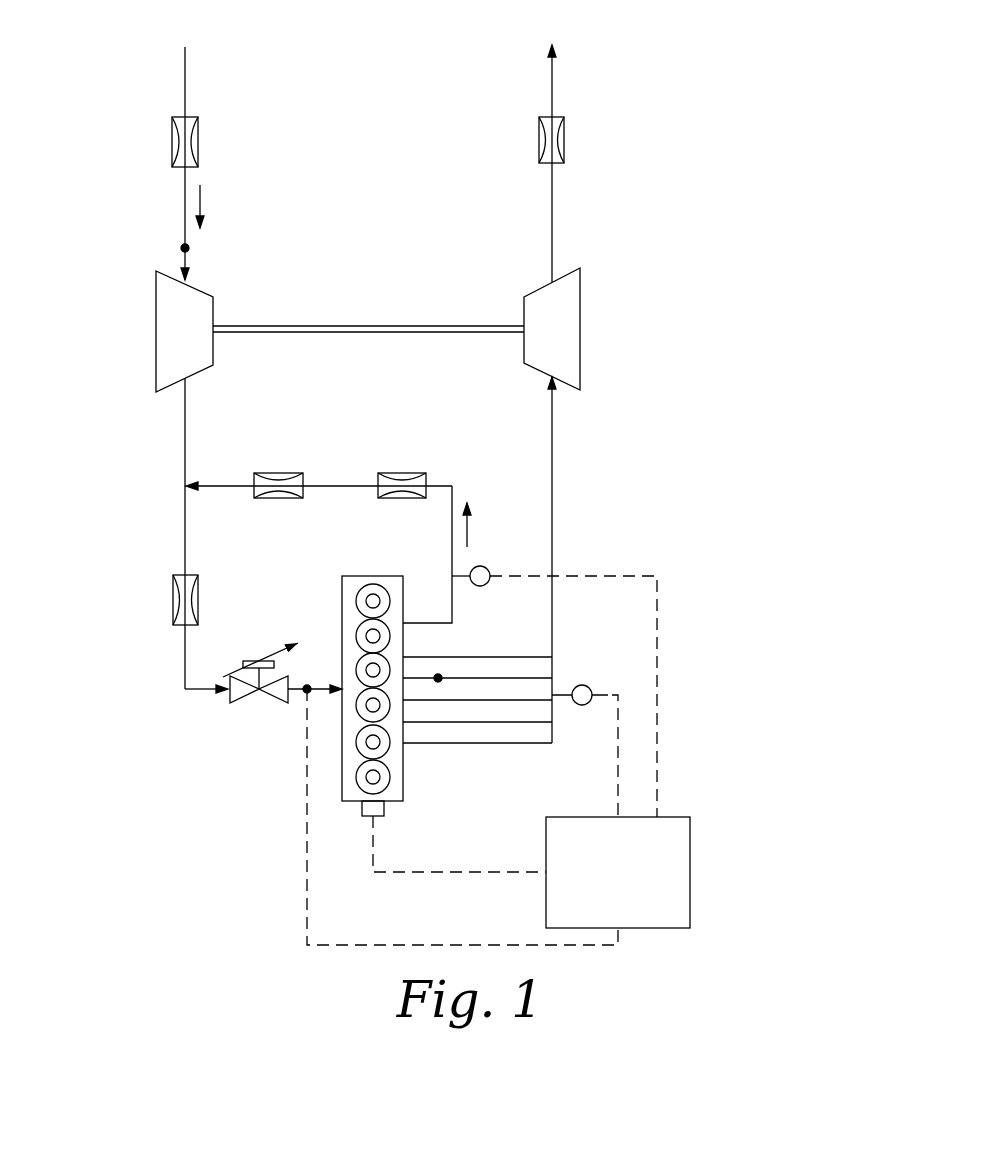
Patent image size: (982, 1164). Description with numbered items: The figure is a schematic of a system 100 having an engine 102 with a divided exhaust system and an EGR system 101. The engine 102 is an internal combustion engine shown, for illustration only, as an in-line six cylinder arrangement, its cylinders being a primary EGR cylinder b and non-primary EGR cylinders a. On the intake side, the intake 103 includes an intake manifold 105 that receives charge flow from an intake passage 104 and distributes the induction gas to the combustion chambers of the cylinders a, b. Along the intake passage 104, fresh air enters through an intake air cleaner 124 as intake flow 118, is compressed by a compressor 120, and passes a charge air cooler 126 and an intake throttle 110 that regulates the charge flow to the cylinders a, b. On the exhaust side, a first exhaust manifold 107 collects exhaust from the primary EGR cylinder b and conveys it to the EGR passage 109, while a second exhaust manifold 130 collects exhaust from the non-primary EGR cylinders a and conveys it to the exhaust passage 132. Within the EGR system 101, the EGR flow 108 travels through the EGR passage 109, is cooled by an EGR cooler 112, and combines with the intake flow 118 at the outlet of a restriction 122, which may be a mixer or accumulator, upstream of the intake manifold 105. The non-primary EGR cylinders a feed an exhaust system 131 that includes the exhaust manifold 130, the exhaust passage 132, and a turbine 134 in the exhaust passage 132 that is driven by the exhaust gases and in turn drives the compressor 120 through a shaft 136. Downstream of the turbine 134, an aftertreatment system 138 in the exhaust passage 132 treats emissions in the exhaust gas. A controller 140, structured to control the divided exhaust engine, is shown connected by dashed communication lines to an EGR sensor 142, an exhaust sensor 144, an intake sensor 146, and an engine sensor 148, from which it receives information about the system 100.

The system 100 is at (798, 238).
The EGR system 101 is at (435, 422).
The engine 102 is at (352, 803).
The intake 103 is at (150, 622).
The intake passage 104 is at (185, 435).
The intake manifold 105 is at (342, 798).
The first exhaust manifold 107 is at (428, 622).
The EGR flow 108 is at (468, 530).
The EGR passage 109 is at (452, 490).
The intake throttle 110 is at (240, 705).
The EGR cooler 112 is at (390, 473).
The intake flow 118 is at (203, 196).
The compressor 120 is at (203, 345).
The restriction 122 is at (268, 473).
The intake air cleaner 124 is at (198, 127).
The charge air cooler 126 is at (173, 590).
The second exhaust manifold 130 is at (553, 694).
The exhaust system 131 is at (658, 458).
The exhaust passage 132 is at (553, 540).
The turbine 134 is at (566, 342).
The shaft 136 is at (295, 326).
The aftertreatment system 138 is at (566, 155).
The controller 140 is at (690, 875).
The EGR sensor 142 is at (488, 586).
The exhaust sensor 144 is at (582, 705).
The intake sensor 146 is at (307, 689).
The engine sensor 148 is at (384, 808).
The non-primary EGR cylinders a is at (357, 678).
The primary EGR cylinder b is at (357, 642).